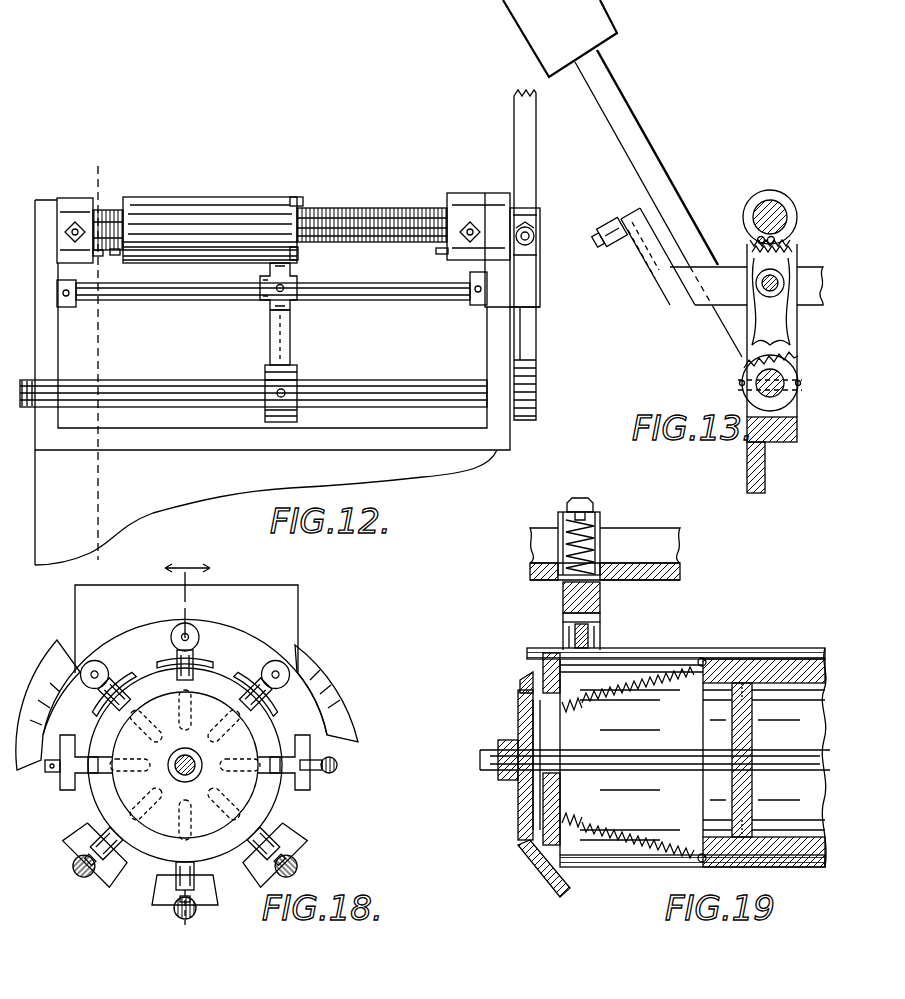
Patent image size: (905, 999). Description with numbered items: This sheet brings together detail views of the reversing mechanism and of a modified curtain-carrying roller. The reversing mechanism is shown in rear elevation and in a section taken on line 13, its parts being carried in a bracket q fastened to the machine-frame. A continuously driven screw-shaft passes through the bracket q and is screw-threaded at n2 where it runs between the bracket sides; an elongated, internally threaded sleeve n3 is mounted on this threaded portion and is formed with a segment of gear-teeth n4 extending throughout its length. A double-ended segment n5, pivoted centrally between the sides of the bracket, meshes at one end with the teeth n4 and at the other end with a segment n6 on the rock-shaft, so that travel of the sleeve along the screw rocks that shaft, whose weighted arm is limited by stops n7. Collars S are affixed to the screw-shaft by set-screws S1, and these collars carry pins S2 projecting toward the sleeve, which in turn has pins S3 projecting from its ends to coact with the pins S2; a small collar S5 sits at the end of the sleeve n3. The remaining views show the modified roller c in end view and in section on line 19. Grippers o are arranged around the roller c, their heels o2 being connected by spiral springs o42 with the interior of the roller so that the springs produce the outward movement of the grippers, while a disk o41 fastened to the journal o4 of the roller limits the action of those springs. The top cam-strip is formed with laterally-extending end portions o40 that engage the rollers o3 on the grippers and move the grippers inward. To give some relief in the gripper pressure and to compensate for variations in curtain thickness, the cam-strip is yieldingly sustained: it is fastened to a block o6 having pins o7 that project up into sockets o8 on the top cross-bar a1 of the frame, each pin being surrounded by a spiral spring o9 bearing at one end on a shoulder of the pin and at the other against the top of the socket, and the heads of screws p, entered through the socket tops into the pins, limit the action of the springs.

In FIG. 12, the bracket q is at (272, 382).
In FIG. 13, the bracket q is at (782, 457).
In FIG. 12, the section line 13 is at (98, 363).
In FIG. 12, the collar S is at (77, 210).
In FIG. 12, the set-screw S1 is at (70, 234).
In FIG. 12, the collar pin S2 is at (97, 257).
In FIG. 12, the sleeve pin S3 is at (115, 256).
In FIG. 12, the collar S5 is at (300, 200).
In FIG. 12, the screw-threaded portion n2 is at (372, 210).
In FIG. 13, the screw-threaded portion n2 is at (778, 204).
In FIG. 12, the elongated sleeve n3 is at (165, 200).
In FIG. 12, the segment of gear-teeth n4 is at (198, 248).
In FIG. 13, the segment of gear-teeth n4 is at (790, 238).
In FIG. 12, the double-ended segment n5 is at (285, 285).
In FIG. 13, the double-ended segment n5 is at (786, 268).
In FIG. 12, the segment on rock-shaft n6 is at (297, 382).
In FIG. 13, the segment on rock-shaft n6 is at (684, 160).
In FIG. 12, the stop n7 is at (538, 252).
In FIG. 13, the stop n7 is at (656, 252).
In FIG. 18, the section line 19 is at (187, 746).
In FIG. 18, the gripper o is at (125, 680).
In FIG. 19, the gripper o is at (548, 640).
In FIG. 19, the gripper heel o2 is at (573, 706).
In FIG. 18, the gripper roller o3 is at (274, 658).
In FIG. 19, the gripper roller o3 is at (563, 612).
In FIG. 18, the roller journal o4 is at (205, 770).
In FIG. 19, the roller journal o4 is at (600, 636).
In FIG. 18, the block o6 is at (293, 612).
In FIG. 19, the block o6 is at (600, 604).
In FIG. 19, the pin o7 is at (600, 592).
In FIG. 19, the socket o8 is at (600, 522).
In FIG. 19, the spiral spring o9 is at (597, 542).
In FIG. 18, the laterally-extending end portion o40 is at (38, 718).
In FIG. 19, the disk o41 is at (518, 730).
In FIG. 19, the spiral spring o42 is at (612, 696).
In FIG. 19, the screw p is at (583, 498).
In FIG. 19, the top cross-bar a1 is at (680, 568).
In FIG. 18, the curtain roller c is at (270, 805).
In FIG. 19, the curtain roller c is at (762, 656).